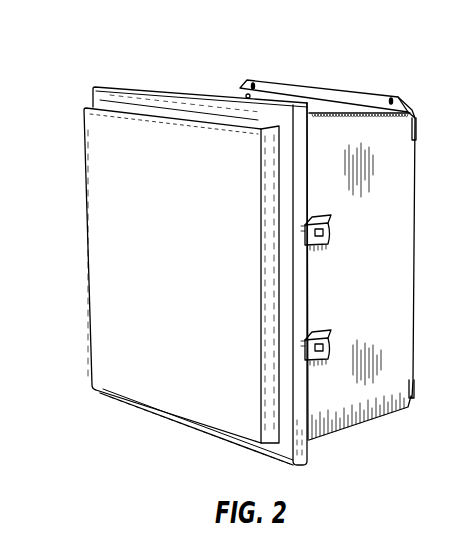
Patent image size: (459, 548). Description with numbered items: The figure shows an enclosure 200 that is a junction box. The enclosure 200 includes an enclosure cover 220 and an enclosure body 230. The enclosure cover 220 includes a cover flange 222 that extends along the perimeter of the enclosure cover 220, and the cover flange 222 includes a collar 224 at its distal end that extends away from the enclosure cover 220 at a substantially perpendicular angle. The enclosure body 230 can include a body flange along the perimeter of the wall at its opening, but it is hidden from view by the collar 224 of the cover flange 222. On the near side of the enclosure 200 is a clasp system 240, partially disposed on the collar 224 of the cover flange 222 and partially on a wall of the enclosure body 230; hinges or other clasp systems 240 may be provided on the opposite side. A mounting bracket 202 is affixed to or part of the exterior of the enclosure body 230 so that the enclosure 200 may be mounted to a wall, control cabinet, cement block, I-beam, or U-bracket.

The enclosure 200 is at (122, 44).
The mounting bracket 202 is at (323, 86).
The enclosure cover 220 is at (190, 289).
The cover flange 222 is at (162, 103).
The collar 224 is at (303, 452).
The enclosure body 230 is at (378, 287).
The clasp system 240 is at (330, 222).